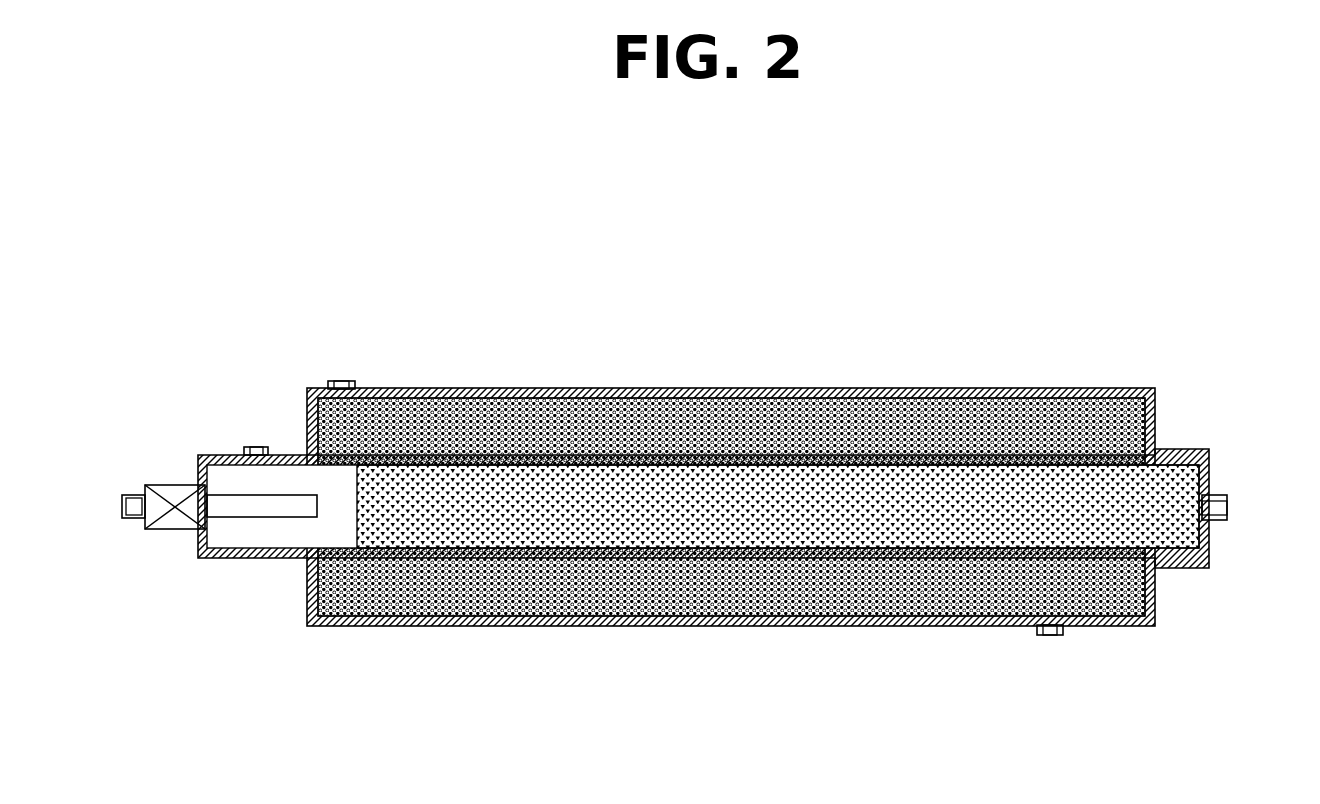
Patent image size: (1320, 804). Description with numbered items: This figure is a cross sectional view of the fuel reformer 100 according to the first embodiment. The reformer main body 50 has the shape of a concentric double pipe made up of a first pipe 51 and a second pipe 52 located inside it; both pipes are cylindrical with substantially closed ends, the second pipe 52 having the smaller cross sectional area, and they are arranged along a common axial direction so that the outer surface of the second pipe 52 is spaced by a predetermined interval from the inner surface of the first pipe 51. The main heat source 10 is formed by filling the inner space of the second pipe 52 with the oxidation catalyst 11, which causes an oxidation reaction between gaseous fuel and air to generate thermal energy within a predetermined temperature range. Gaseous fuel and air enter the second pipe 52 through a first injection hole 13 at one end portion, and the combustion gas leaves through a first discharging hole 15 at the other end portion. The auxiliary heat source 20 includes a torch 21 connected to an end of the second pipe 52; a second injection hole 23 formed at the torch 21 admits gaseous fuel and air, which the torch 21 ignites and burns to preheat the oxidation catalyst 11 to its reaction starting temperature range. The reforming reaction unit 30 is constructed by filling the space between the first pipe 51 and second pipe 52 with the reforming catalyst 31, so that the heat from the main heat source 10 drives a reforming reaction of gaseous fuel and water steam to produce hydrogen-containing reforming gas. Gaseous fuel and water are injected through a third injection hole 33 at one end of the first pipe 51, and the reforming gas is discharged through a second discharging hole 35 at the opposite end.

The fuel reformer 100 is at (741, 239).
The main heat source 10 is at (556, 560).
The oxidation catalyst 11 is at (934, 534).
The first injection hole 13 is at (255, 447).
The first discharging hole 15 is at (1228, 507).
The auxiliary heat source 20 is at (679, 531).
The torch 21 is at (168, 485).
The second injection hole 23 is at (121, 507).
The reforming reaction unit 30 is at (731, 489).
The reforming catalyst 31 is at (698, 413).
The third injection hole 33 is at (340, 381).
The second discharging hole 35 is at (1050, 636).
The reformer main body 50 is at (731, 359).
The first pipe 51 is at (508, 412).
The second pipe 52 is at (578, 457).